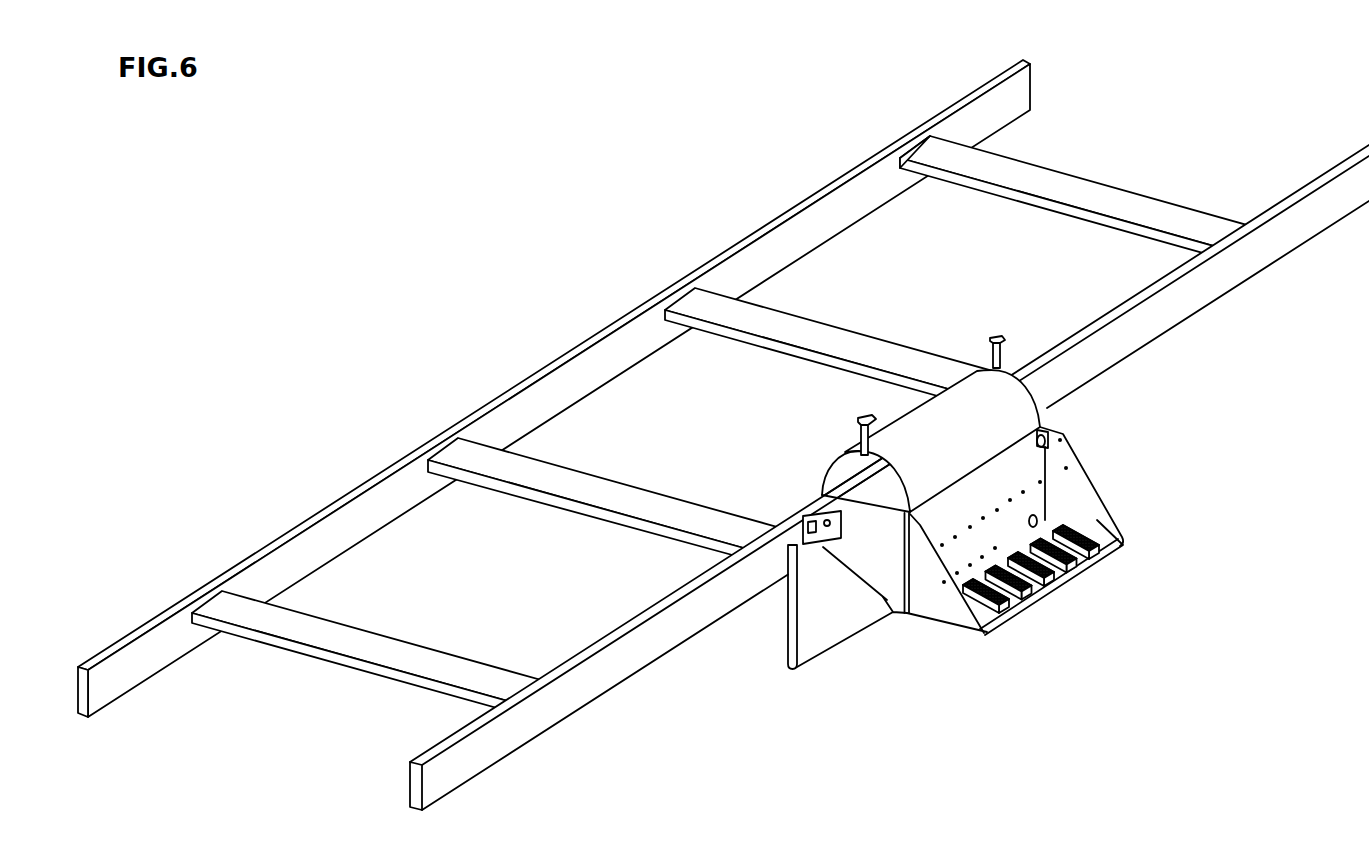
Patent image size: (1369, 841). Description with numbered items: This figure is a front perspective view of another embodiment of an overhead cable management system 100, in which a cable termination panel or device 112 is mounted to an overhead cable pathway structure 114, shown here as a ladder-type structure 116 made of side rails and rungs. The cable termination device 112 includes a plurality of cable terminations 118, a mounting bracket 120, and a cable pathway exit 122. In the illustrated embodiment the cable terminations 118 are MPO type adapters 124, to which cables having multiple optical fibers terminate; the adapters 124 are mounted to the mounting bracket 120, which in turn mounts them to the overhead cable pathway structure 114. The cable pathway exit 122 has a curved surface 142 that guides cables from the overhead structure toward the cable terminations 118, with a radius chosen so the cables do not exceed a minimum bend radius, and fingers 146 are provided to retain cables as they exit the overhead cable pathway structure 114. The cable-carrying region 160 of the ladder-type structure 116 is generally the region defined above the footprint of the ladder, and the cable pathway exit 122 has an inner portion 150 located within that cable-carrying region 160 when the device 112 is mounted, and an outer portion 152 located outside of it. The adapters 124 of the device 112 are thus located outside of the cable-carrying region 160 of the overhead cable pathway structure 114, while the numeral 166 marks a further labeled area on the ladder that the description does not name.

The overhead cable management system 100 is at (484, 216).
The cable termination device 112 is at (889, 455).
The overhead cable pathway structure 114 is at (723, 435).
The ladder-type structure 116 is at (680, 280).
The cable terminations 118 is at (1089, 580).
The mounting bracket 120 is at (768, 635).
The cable pathway exit 122 is at (889, 455).
The MPO type adapters 124 is at (1058, 610).
The curved surface 142 is at (969, 434).
The fingers 146 is at (858, 433).
The inner portion 150 is at (806, 462).
The outer portion 152 is at (1046, 417).
The cable-carrying region 160 is at (499, 590).
The opening 166 is at (1149, 128).